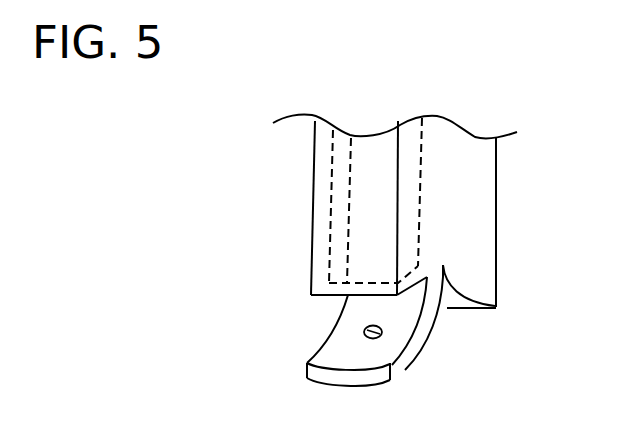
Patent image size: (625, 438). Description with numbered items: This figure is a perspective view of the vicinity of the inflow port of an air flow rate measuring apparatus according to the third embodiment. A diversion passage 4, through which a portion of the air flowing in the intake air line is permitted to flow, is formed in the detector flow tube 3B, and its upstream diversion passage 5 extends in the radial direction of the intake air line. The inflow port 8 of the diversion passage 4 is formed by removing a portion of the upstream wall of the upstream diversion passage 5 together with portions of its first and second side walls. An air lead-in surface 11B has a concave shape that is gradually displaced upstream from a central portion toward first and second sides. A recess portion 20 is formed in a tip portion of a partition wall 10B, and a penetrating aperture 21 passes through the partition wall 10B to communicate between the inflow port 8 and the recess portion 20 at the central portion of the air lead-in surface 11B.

The detector flow tube 3B is at (506, 171).
The diversion passage 4 is at (312, 162).
The upstream diversion passage 5 is at (359, 201).
The inflow port 8 is at (328, 308).
The penetrating aperture 21 is at (366, 330).
The partition wall 10B is at (298, 363).
The air lead-in surface 11B is at (405, 335).
The recess portion 20 is at (452, 317).